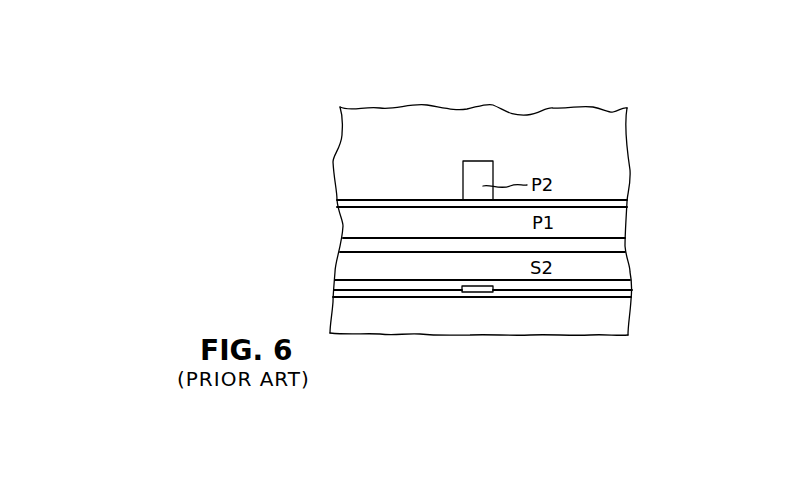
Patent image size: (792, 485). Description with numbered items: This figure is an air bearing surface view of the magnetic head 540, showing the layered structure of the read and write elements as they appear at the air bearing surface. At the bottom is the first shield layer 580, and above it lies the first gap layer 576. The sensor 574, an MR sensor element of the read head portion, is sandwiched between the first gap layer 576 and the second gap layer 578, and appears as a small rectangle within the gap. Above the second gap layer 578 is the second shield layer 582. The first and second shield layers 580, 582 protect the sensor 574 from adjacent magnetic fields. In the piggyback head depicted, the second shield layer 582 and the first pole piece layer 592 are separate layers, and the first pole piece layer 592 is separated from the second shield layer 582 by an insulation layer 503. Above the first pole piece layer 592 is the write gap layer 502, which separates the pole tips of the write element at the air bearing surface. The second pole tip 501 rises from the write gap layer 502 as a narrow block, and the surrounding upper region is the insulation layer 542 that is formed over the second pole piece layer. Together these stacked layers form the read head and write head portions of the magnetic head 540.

The magnetic head 540 is at (643, 121).
The insulation layer 542 is at (342, 137).
The second pole tip 501 is at (473, 168).
The write gap layer 502 is at (402, 199).
The first pole piece layer 592 is at (343, 225).
The insulation layer 503 is at (620, 245).
The second shield layer 582 is at (338, 272).
The second gap layer 578 is at (590, 285).
The sensor 574 is at (477, 292).
The first gap layer 576 is at (392, 297).
The first shield layer 580 is at (618, 318).